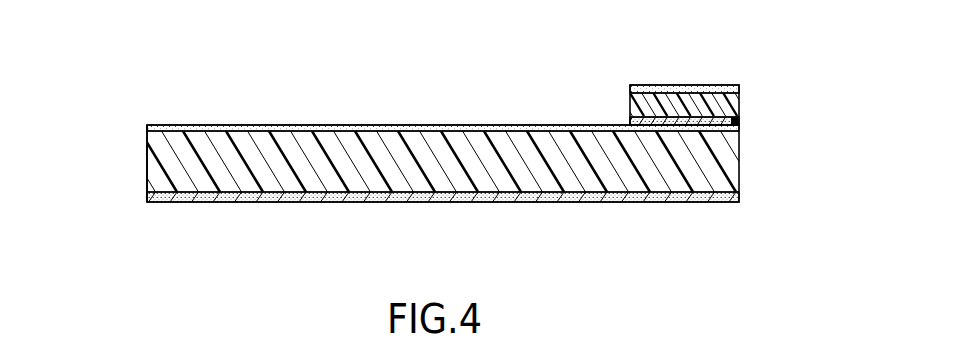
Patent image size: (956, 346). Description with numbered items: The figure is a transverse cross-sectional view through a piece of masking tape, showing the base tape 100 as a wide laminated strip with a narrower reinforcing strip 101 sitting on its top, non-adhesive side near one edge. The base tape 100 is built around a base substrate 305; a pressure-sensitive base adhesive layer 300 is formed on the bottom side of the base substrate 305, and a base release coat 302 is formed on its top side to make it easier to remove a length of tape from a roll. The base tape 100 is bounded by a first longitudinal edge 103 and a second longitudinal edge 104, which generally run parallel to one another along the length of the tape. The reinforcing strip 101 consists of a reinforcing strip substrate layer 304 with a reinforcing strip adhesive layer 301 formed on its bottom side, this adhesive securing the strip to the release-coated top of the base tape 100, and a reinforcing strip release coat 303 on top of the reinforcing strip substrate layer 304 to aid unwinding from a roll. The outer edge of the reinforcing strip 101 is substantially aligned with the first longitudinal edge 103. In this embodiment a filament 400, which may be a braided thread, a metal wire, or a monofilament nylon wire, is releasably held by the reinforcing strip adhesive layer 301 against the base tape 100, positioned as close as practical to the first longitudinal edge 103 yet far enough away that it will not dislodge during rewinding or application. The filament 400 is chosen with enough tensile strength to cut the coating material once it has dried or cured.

The base tape 100 is at (129, 187).
The reinforcing strip 101 is at (692, 84).
The first longitudinal edge 103 is at (740, 157).
The second longitudinal edge 104 is at (146, 137).
The base adhesive layer 300 is at (357, 199).
The reinforcing strip adhesive layer 301 is at (631, 121).
The base release coat 302 is at (330, 127).
The reinforcing strip release coat 303 is at (637, 84).
The reinforcing strip substrate layer 304 is at (740, 103).
The base substrate 305 is at (165, 168).
The filament 400 is at (740, 122).